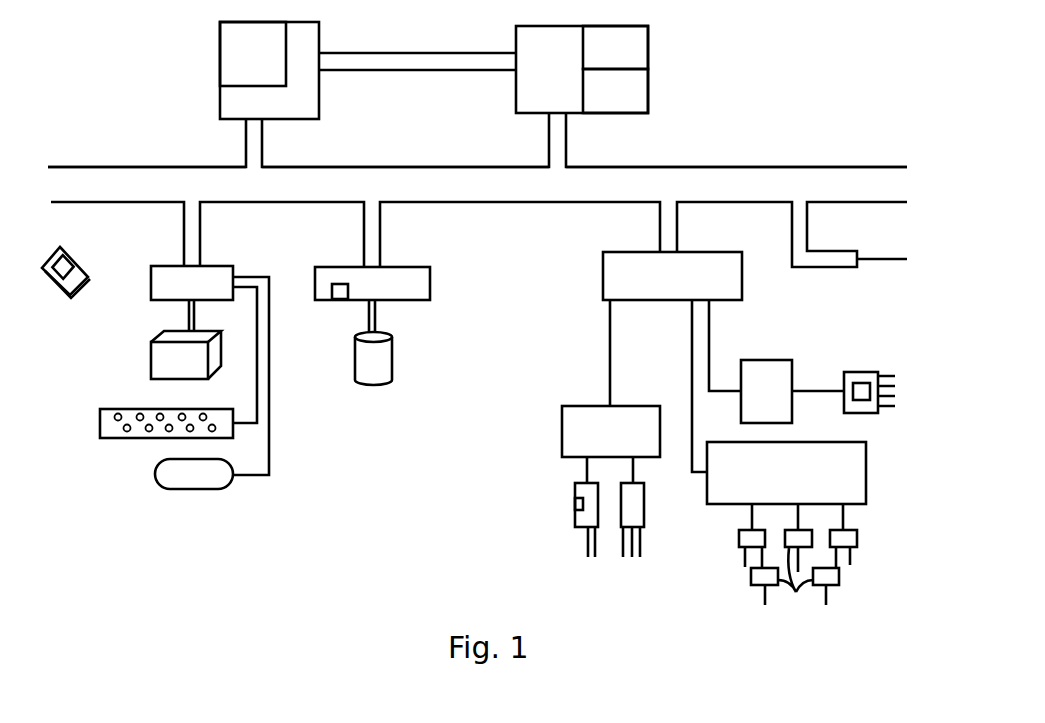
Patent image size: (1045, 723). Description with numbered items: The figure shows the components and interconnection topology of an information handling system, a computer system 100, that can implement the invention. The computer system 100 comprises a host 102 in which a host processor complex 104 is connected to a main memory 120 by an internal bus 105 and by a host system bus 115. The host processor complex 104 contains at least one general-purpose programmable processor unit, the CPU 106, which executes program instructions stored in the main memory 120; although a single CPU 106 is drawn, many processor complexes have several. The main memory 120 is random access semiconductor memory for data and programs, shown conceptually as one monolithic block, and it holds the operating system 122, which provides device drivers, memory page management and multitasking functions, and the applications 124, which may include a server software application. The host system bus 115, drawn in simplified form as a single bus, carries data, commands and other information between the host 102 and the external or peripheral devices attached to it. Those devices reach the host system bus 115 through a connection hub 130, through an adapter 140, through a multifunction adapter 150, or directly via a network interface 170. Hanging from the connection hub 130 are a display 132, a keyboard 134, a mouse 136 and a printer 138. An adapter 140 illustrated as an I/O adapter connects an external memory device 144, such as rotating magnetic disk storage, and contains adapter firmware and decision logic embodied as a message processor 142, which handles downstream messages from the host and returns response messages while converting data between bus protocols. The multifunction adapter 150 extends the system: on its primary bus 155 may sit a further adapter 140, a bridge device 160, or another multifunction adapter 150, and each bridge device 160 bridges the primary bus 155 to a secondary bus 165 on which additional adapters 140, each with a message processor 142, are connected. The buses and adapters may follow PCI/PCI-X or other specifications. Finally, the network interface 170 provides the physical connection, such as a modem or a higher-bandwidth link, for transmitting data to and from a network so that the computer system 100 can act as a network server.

The computer system 100 is at (71, 493).
The host 102 is at (841, 99).
The host processor complex 104 is at (220, 100).
The internal bus 105 is at (430, 71).
The general-purpose programmable processor unit (CPU) 106 is at (220, 52).
The host system bus 115 is at (448, 167).
The main memory 120 is at (516, 28).
The operating system 122 is at (648, 52).
The applications 124 is at (648, 92).
The connection hub 130 is at (206, 358).
The display 132 is at (158, 340).
The keyboard 134 is at (130, 409).
The mouse 136 is at (165, 489).
The printer 138 is at (46, 252).
The adapter 140 is at (338, 267).
The message processor 142 is at (340, 300).
The external memory device 144 is at (373, 383).
The multifunction adapter 150 is at (883, 480).
The primary bus 155 is at (610, 367).
The bridge device 160 is at (562, 445).
The secondary bus 165 is at (812, 392).
The network interface 170 is at (882, 246).